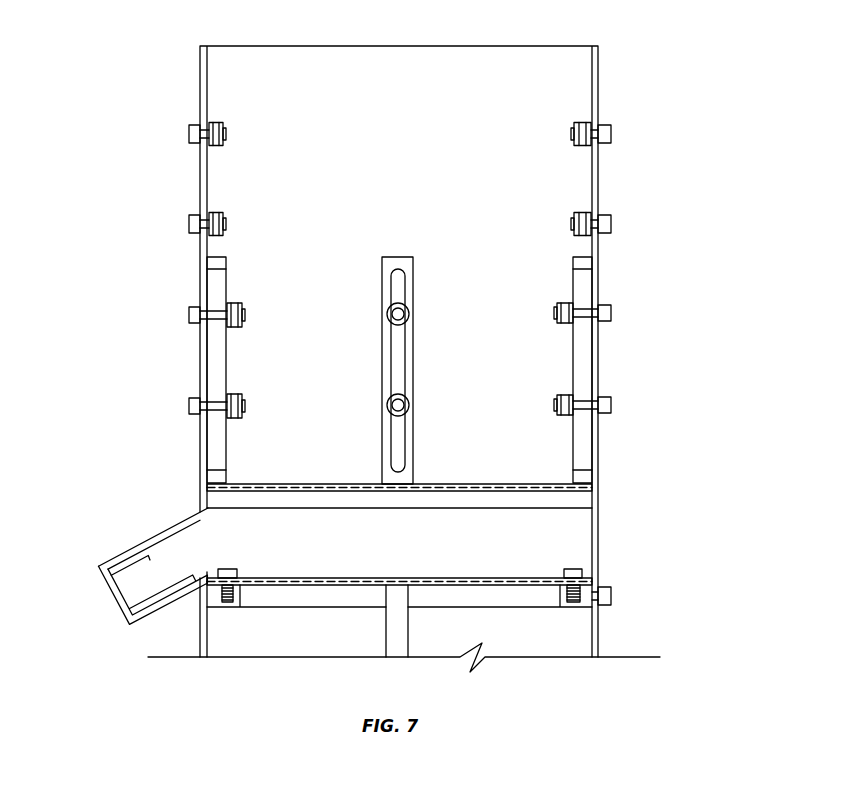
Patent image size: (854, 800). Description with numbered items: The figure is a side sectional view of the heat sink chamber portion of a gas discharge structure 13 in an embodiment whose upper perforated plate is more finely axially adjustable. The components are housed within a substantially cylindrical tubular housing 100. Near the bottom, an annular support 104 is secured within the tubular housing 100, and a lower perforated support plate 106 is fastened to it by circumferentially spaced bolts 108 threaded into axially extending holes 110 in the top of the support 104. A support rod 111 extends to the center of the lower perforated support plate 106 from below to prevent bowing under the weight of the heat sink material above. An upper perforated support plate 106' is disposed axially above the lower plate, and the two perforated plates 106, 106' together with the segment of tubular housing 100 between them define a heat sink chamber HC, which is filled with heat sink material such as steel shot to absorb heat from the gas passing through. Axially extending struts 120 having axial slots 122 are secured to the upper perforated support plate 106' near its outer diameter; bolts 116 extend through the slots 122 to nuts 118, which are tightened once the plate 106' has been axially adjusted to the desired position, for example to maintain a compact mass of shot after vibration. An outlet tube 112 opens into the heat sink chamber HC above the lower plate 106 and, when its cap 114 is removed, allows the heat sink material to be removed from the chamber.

The tubular housing 100 is at (594, 100).
The gas discharge structure 13 is at (647, 191).
The axial slots 122 is at (398, 355).
The nuts 118 is at (240, 303).
The axially extending holes 110 is at (240, 394).
The axially extending struts 120 is at (582, 358).
The bolts 116 is at (600, 313).
The perforated support plate 106' is at (450, 469).
The heat sink chamber HC is at (505, 543).
The perforated support plate 106 is at (441, 558).
The support rod 111 is at (397, 634).
The bolts 108 is at (223, 568).
The annular support 104 is at (585, 596).
The outlet tube 112 is at (165, 532).
The cap 114 is at (113, 598).